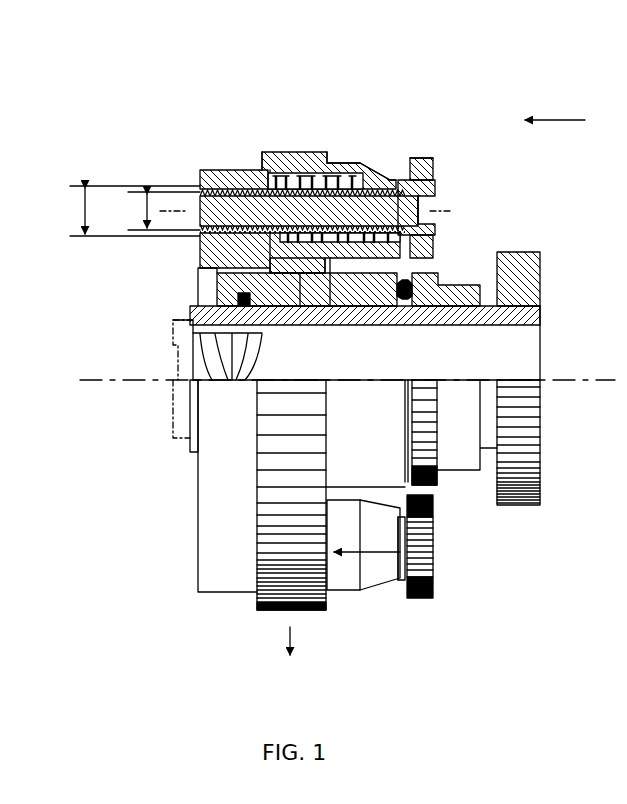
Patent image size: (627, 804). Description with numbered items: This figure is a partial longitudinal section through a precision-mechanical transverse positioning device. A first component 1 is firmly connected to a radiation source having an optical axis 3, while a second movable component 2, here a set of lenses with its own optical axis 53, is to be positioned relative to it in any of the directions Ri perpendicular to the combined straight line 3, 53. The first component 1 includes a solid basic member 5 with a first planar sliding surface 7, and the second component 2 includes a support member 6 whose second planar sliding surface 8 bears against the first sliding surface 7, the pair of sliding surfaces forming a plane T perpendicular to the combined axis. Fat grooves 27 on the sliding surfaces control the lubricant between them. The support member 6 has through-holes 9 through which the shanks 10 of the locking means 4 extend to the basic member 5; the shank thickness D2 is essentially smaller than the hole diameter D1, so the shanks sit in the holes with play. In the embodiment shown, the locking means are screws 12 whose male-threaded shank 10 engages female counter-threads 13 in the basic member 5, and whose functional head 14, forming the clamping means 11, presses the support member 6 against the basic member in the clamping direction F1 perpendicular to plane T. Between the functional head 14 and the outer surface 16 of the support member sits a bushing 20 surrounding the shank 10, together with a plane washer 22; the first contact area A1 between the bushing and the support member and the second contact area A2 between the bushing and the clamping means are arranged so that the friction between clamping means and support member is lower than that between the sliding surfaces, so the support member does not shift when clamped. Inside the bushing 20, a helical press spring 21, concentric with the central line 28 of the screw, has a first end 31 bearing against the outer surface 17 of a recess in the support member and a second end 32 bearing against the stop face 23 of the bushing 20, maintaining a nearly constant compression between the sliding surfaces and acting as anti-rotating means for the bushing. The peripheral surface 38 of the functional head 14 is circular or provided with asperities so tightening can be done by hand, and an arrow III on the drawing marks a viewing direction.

The first component 1 is at (213, 162).
The second movable component 2 is at (467, 287).
The optical axis 3 is at (143, 382).
The locking means 4 is at (373, 152).
The basic member 5 is at (255, 170).
The support member 6 is at (300, 162).
The first planar sliding surface 7 is at (264, 240).
The second planar sliding surface 8 is at (284, 302).
The through-holes 9 is at (306, 292).
The shanks 10 is at (330, 297).
The clamping means 11 is at (432, 152).
The screws 12 is at (440, 185).
The female counter-threads 13 is at (235, 178).
The functional head 14 is at (412, 556).
The outer surface of the support member 16 is at (331, 424).
The outer surface of a recess in the support member 17 is at (250, 180).
The bushing 20 is at (348, 172).
The press spring 21 is at (293, 150).
The washer 22 is at (397, 580).
The stop face of the bushing 23 is at (402, 167).
The fat grooves 27 is at (272, 258).
The central line 28 is at (445, 210).
The first end of the press spring 31 is at (292, 162).
The second end of the press spring 32 is at (355, 238).
The peripheral surface of the functional head 38 is at (421, 490).
The optical axis of the set of lenses 53 is at (577, 380).
The first contact area A1 is at (320, 152).
The second contact area A2 is at (440, 229).
The hole diameter D1 is at (123, 211).
The shank thickness D2 is at (154, 211).
The clamping direction / compression force F1 is at (364, 532).
The positioning directions Ri is at (305, 641).
The view direction III is at (561, 120).